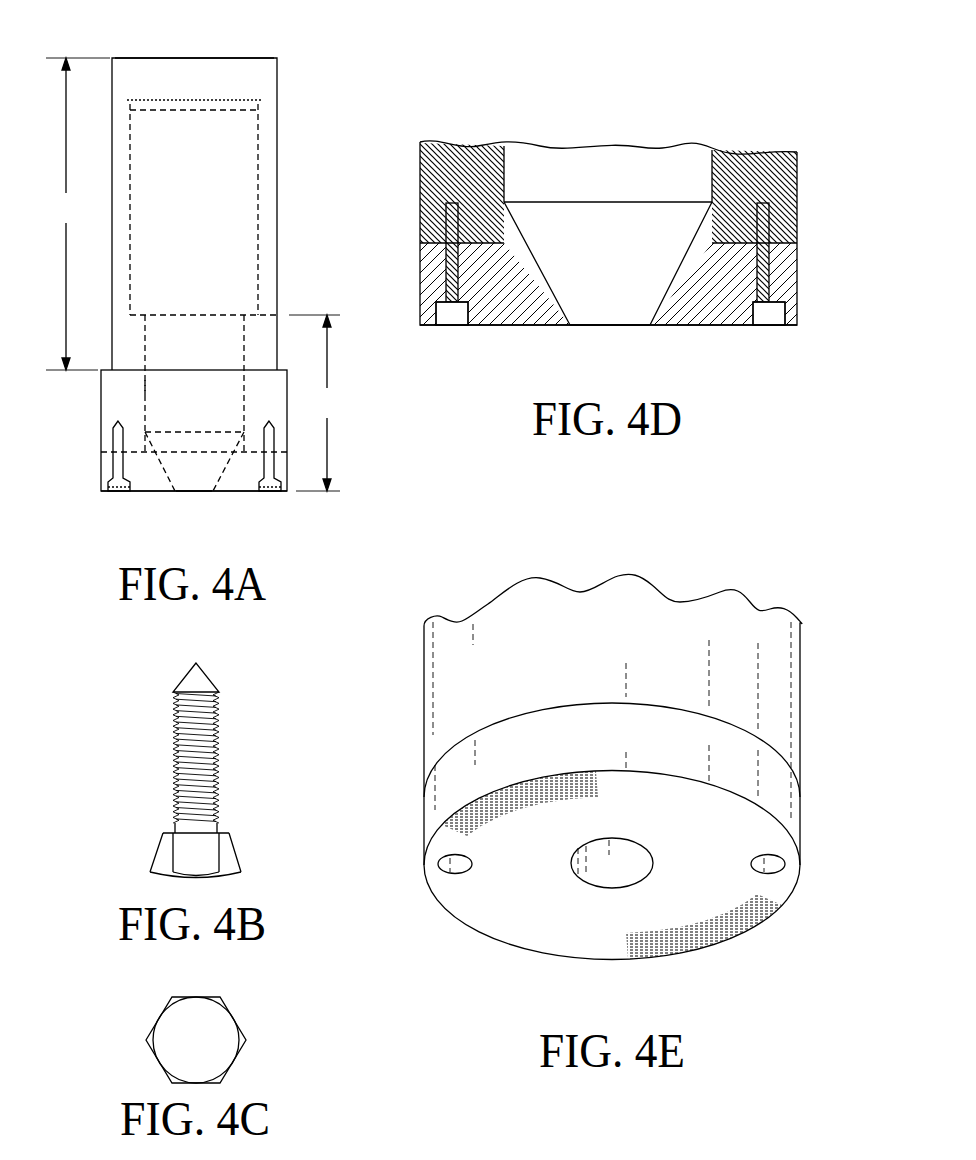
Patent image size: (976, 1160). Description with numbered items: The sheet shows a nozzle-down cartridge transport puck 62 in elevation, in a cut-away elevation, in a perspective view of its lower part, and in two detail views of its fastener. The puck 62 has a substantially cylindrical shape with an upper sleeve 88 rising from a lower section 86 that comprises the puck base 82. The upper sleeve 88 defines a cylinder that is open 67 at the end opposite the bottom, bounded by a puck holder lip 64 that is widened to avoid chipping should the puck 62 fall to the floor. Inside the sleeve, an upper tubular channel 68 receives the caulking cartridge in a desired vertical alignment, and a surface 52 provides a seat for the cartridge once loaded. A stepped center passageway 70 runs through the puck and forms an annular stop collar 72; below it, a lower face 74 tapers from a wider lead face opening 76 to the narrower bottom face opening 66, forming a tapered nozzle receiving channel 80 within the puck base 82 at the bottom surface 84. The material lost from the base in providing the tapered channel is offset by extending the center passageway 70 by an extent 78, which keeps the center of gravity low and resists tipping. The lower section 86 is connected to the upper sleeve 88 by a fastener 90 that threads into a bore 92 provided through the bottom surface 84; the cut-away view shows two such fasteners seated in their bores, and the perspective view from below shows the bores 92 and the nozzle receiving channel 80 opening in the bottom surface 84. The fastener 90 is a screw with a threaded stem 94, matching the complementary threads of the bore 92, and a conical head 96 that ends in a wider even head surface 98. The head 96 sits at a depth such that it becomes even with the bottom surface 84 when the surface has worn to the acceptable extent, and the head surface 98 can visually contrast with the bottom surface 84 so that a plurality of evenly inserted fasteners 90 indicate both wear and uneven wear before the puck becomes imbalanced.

In FIG. 4A, the seat surface 52 is at (248, 300).
In FIG. 4A, the puck 62 is at (293, 147).
In FIG. 4A, the puck holder lip 64 is at (133, 137).
In FIG. 4A, the bottom face opening 66 is at (195, 494).
In FIG. 4D, the bottom face opening 66 is at (605, 326).
In FIG. 4A, the opening 67 is at (220, 58).
In FIG. 4A, the upper tubular channel 68 is at (240, 88).
In FIG. 4A, the stepped center passageway 70 is at (210, 203).
In FIG. 4A, the annular stop collar 72 is at (133, 327).
In FIG. 4A, the lower face 74 is at (145, 387).
In FIG. 4A, the lead face opening 76 is at (160, 438).
In FIG. 4A, the passageway extension 78 is at (258, 455).
In FIG. 4A, the tapered nozzle receiving channel 80 is at (205, 440).
In FIG. 4D, the tapered nozzle receiving channel 80 is at (645, 228).
In FIG. 4E, the tapered nozzle receiving channel 80 is at (632, 870).
In FIG. 4A, the puck base 82 is at (100, 462).
In FIG. 4D, the puck base 82 is at (420, 288).
In FIG. 4E, the puck base 82 is at (430, 810).
In FIG. 4A, the bottom surface 84 is at (150, 494).
In FIG. 4D, the bottom surface 84 is at (525, 326).
In FIG. 4E, the bottom surface 84 is at (512, 918).
In FIG. 4A, the lower section 86 is at (314, 403).
In FIG. 4A, the upper sleeve 88 is at (78, 214).
In FIG. 4D, the fastener 90 is at (446, 255).
In FIG. 4B, the fastener 90 is at (144, 794).
In FIG. 4A, the bore 92 is at (118, 494).
In FIG. 4D, the bore 92 is at (451, 322).
In FIG. 4E, the bore 92 is at (455, 872).
In FIG. 4A, the stem 94 is at (112, 108).
In FIG. 4D, the stem 94 is at (420, 188).
In FIG. 4B, the stem 94 is at (219, 745).
In FIG. 4E, the stem 94 is at (424, 697).
In FIG. 4B, the head 96 is at (235, 850).
In FIG. 4C, the head 96 is at (233, 1062).
In FIG. 4B, the head surface 98 is at (210, 878).
In FIG. 4C, the head surface 98 is at (181, 1053).